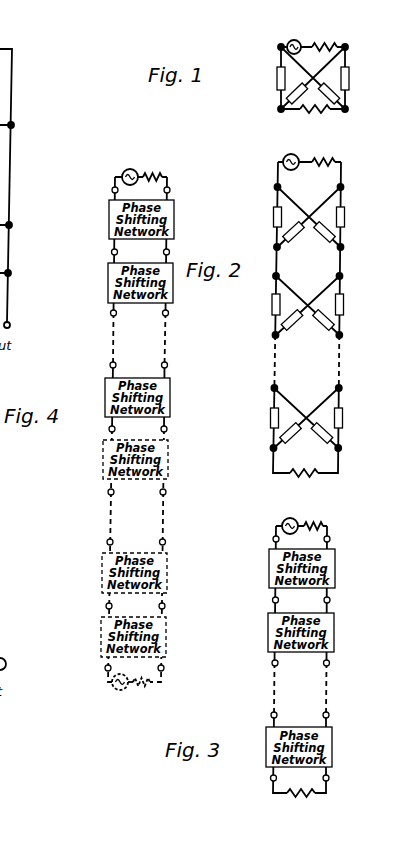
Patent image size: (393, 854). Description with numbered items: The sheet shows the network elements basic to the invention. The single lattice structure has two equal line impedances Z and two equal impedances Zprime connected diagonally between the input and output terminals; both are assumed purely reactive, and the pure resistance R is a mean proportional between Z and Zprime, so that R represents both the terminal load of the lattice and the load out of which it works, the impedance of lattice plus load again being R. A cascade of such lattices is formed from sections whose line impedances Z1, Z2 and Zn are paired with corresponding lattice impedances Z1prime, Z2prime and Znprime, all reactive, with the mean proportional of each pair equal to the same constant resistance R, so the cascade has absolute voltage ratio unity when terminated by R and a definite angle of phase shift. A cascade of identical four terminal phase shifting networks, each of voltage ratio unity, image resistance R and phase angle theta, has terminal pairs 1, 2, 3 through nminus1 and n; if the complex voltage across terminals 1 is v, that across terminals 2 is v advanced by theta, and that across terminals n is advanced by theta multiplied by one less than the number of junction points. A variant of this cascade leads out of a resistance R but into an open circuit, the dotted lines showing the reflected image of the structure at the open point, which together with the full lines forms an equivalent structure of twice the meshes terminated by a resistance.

In FIG. 1, the resistance R is at (321, 47).
In FIG. 2, the resistance R is at (316, 160).
In FIG. 3, the resistance R is at (313, 522).
In FIG. 4, the resistance R is at (154, 175).
In FIG. 1, the line impedance Z is at (277, 76).
In FIG. 1, the lattice impedance Zprime is at (289, 98).
In FIG. 2, the line impedance of first section Z1 is at (274, 215).
In FIG. 2, the lattice impedance of first section Z1prime is at (291, 240).
In FIG. 2, the line impedance of second section Z2 is at (273, 309).
In FIG. 2, the lattice impedance of second section Z2prime is at (289, 329).
In FIG. 2, the line impedance of last section Zn is at (271, 426).
In FIG. 2, the lattice impedance of last section Znprime is at (288, 442).
In FIG. 3, the terminals 1 is at (302, 540).
In FIG. 4, the terminals 1 is at (137, 430).
In FIG. 3, the terminals 2 is at (299, 602).
In FIG. 4, the terminals 2 is at (133, 430).
In FIG. 3, the terminals 3 is at (298, 664).
In FIG. 4, the terminals 3 is at (135, 429).
In FIG. 3, the terminals nminus1 is at (297, 715).
In FIG. 4, the terminals nminus1 is at (132, 428).
In FIG. 3, the terminals n is at (270, 779).
In FIG. 4, the terminals n is at (137, 430).